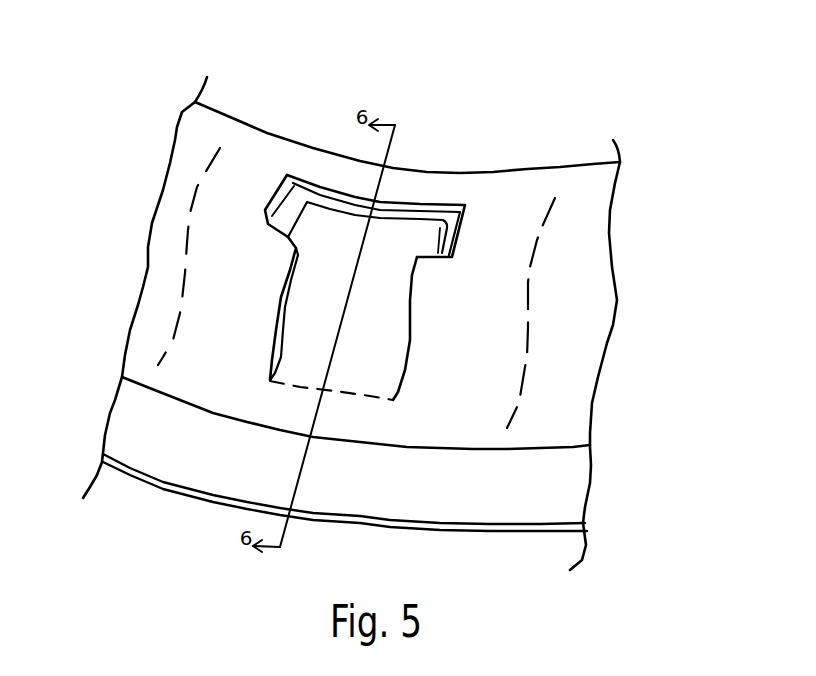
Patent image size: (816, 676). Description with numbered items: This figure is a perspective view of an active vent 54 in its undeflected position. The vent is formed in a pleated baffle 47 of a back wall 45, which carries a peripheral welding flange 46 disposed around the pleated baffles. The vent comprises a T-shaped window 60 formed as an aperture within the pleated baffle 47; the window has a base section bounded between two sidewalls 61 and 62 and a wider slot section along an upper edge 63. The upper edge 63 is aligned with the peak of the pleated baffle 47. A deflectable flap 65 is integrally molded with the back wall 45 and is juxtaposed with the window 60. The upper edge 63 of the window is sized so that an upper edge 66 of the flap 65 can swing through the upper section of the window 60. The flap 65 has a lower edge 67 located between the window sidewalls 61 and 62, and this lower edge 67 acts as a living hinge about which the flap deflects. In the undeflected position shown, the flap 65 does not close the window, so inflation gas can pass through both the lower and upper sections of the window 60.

The back wall 45 is at (503, 529).
The peripheral welding flange 46 is at (167, 453).
The pleated baffle 47 is at (227, 190).
The active vent 54 is at (477, 226).
The T-shaped window 60 is at (344, 264).
The sidewall 61 is at (275, 295).
The sidewall 62 is at (407, 290).
The upper edge 63 is at (294, 180).
The deflectable flap 65 is at (392, 238).
The upper edge of flap 66 is at (334, 208).
The lower edge of flap 67 is at (301, 387).